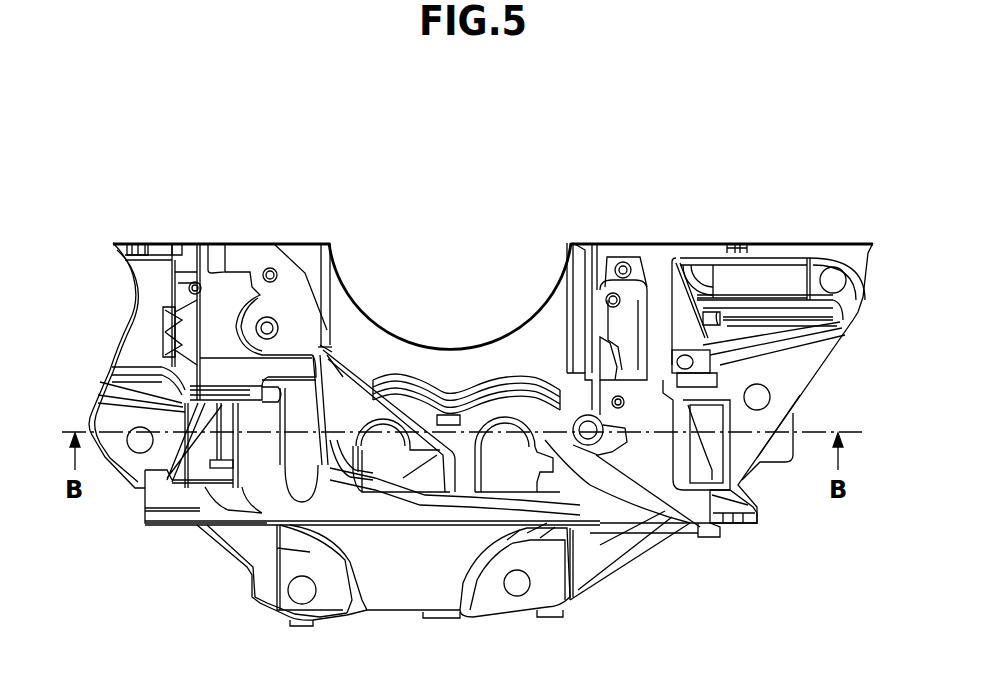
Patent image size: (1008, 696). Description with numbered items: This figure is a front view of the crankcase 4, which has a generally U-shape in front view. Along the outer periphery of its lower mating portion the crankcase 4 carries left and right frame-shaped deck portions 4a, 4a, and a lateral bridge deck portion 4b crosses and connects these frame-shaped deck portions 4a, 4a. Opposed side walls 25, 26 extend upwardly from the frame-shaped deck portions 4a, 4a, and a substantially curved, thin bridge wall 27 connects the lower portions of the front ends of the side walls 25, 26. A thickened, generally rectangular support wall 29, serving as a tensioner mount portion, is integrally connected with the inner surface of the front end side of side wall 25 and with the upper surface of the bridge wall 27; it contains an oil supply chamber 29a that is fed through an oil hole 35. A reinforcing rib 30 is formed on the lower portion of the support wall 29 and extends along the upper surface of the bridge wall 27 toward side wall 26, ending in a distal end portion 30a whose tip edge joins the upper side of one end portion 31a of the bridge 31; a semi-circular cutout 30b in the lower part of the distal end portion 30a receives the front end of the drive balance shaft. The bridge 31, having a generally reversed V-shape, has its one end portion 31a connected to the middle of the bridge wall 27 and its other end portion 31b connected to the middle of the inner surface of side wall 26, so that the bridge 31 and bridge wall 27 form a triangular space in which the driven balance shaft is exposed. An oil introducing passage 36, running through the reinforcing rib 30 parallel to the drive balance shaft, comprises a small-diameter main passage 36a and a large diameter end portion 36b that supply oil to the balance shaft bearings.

The crankcase 4 is at (107, 326).
The frame-shaped deck portion 4a is at (145, 510).
The lateral bridge deck portion 4b is at (395, 407).
The side wall 25 is at (677, 260).
The side wall 26 is at (247, 257).
The bridge wall 27 is at (403, 490).
The support wall 29 is at (597, 260).
The oil supply chamber 29a is at (620, 330).
The reinforcing rib 30 is at (525, 407).
The distal end portion 30a is at (450, 390).
The semi-circular cutout 30b is at (497, 372).
The bridge 31 is at (415, 407).
The one end portion 31a is at (458, 483).
The other end portion 31b is at (352, 393).
The oil hole 35 is at (585, 277).
The oil introducing passage 36 is at (577, 457).
The main passage 36a is at (630, 507).
The large diameter end portion 36b is at (655, 520).